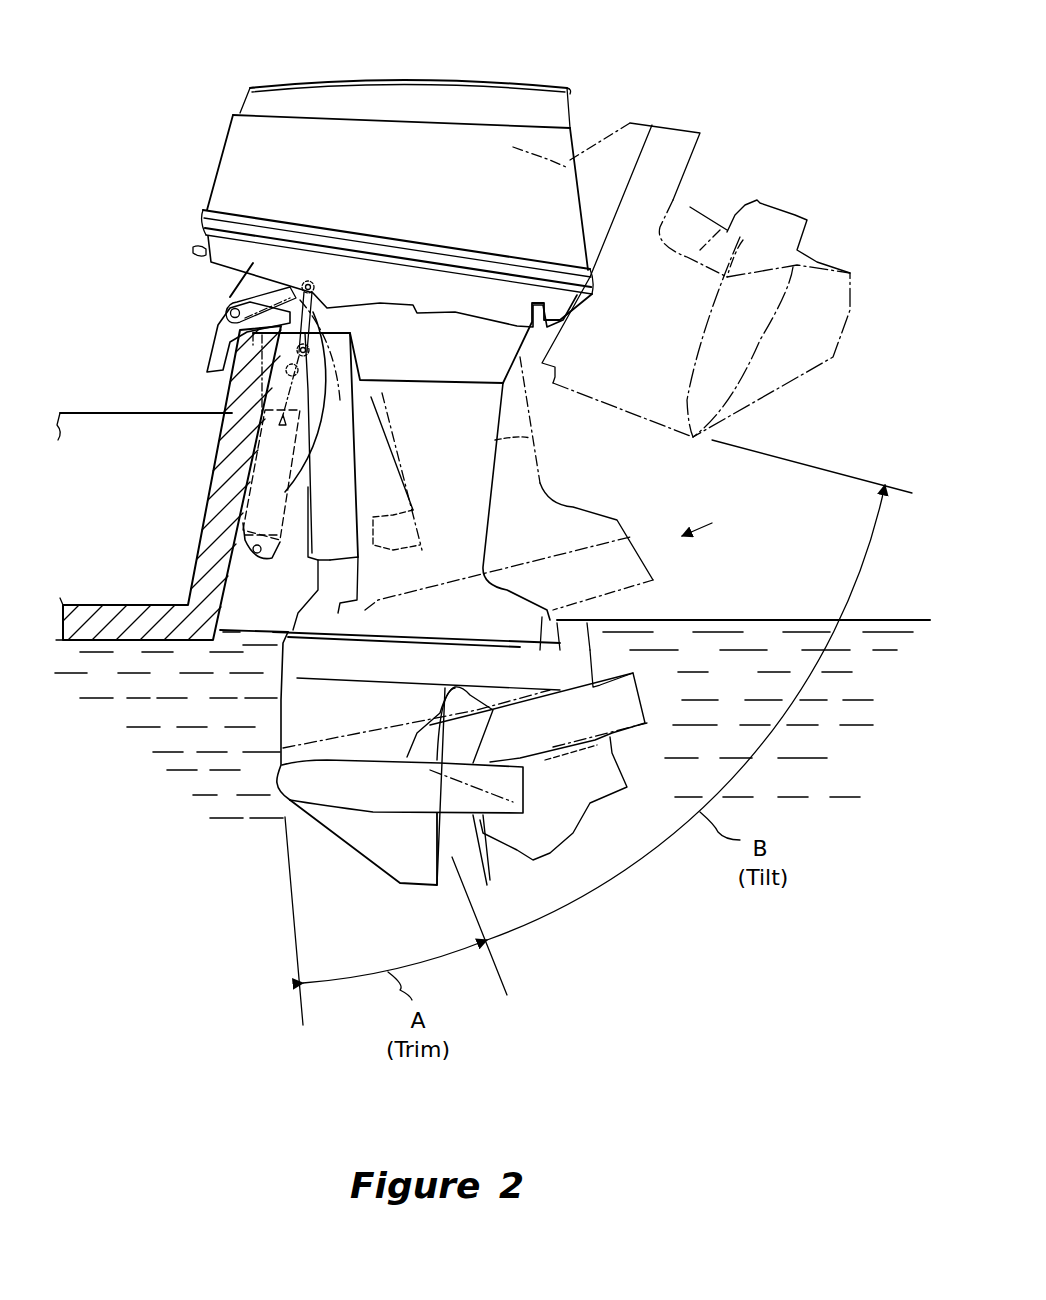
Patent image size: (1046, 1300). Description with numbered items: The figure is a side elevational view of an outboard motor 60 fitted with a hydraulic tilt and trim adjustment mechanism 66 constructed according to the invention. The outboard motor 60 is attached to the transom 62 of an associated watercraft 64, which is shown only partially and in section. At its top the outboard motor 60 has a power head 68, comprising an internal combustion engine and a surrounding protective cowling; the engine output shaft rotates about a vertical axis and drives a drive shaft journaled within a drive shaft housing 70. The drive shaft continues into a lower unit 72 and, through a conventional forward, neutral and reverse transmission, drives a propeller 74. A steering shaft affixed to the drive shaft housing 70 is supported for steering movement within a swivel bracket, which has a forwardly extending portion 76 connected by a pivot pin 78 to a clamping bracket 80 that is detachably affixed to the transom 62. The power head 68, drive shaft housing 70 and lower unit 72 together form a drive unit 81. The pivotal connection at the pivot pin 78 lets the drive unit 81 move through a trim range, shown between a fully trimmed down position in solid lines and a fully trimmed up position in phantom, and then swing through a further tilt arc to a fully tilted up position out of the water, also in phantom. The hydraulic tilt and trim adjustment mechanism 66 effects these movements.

The outboard motor 60 is at (218, 74).
The transom 62 is at (218, 480).
The watercraft 64 is at (88, 407).
The hydraulic tilt and trim adjustment mechanism 66 is at (238, 515).
The power head 68 is at (233, 157).
The drive shaft housing 70 is at (543, 483).
The lower unit 72 is at (392, 712).
The propeller 74 is at (745, 207).
The forwardly extending portion 76 is at (290, 305).
The pivot pin 78 is at (227, 308).
The clamping bracket 80 is at (204, 353).
The drive unit 81 is at (716, 524).